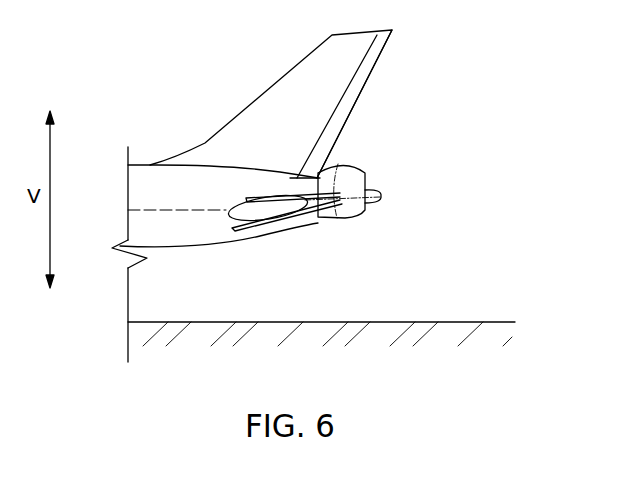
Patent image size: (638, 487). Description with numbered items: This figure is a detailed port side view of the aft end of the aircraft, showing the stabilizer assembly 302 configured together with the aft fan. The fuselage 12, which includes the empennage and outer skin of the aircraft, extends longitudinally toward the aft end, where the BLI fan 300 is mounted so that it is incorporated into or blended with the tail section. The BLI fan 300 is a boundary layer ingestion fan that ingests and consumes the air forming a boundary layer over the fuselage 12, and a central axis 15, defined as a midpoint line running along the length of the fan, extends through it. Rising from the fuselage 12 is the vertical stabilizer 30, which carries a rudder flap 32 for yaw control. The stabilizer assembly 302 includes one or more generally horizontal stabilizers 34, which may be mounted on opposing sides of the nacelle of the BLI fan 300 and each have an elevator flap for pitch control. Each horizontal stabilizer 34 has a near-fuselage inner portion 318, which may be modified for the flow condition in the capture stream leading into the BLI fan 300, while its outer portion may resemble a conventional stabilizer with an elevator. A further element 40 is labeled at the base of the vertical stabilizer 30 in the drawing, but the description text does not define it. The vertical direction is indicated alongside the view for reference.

The fuselage 12 is at (147, 145).
The central axis 15 is at (177, 208).
The vertical stabilizer 30 is at (326, 66).
The rudder flap 32 is at (370, 75).
The horizontal stabilizer 34 is at (296, 164).
The fin root attachment 40 is at (289, 168).
The BLI fan 300 is at (372, 155).
The stabilizer assembly 302 is at (394, 172).
The inner portion 318 is at (303, 217).